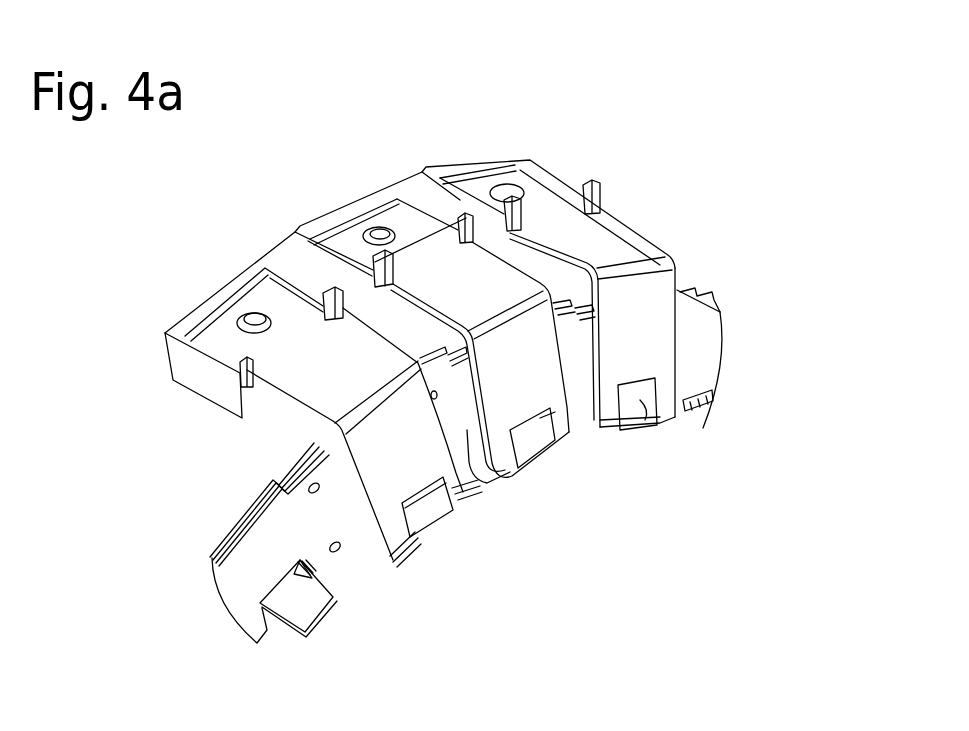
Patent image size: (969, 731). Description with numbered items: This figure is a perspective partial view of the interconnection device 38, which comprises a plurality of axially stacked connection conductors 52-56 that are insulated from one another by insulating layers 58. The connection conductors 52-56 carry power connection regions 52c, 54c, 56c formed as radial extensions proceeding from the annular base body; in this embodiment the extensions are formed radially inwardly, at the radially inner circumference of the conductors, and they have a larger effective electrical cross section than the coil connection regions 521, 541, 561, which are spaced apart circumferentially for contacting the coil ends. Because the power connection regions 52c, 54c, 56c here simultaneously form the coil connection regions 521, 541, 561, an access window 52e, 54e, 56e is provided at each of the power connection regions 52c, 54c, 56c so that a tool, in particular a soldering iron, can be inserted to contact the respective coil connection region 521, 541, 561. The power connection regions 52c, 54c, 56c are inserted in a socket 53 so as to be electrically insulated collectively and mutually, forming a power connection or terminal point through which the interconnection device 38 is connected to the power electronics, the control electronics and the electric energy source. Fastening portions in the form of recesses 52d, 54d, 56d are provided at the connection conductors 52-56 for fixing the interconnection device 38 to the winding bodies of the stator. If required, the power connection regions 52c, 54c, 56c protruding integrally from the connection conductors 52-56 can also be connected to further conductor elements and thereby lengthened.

The interconnection device 38 is at (770, 730).
The connection conductors 52-56 is at (205, 568).
The power connection region 52c is at (220, 335).
The power connection region 54c is at (350, 233).
The power connection region 56c is at (527, 165).
The socket 53 is at (417, 185).
The recess 52d is at (342, 553).
The recess 54d is at (421, 451).
The recess 56d is at (484, 450).
The access window 52e is at (433, 493).
The access window 54e is at (540, 428).
The access window 56e is at (642, 393).
The coil connection region 521 is at (433, 520).
The coil connection region 541 is at (533, 450).
The coil connection region 561 is at (635, 420).
The insulating layers 58 is at (279, 455).